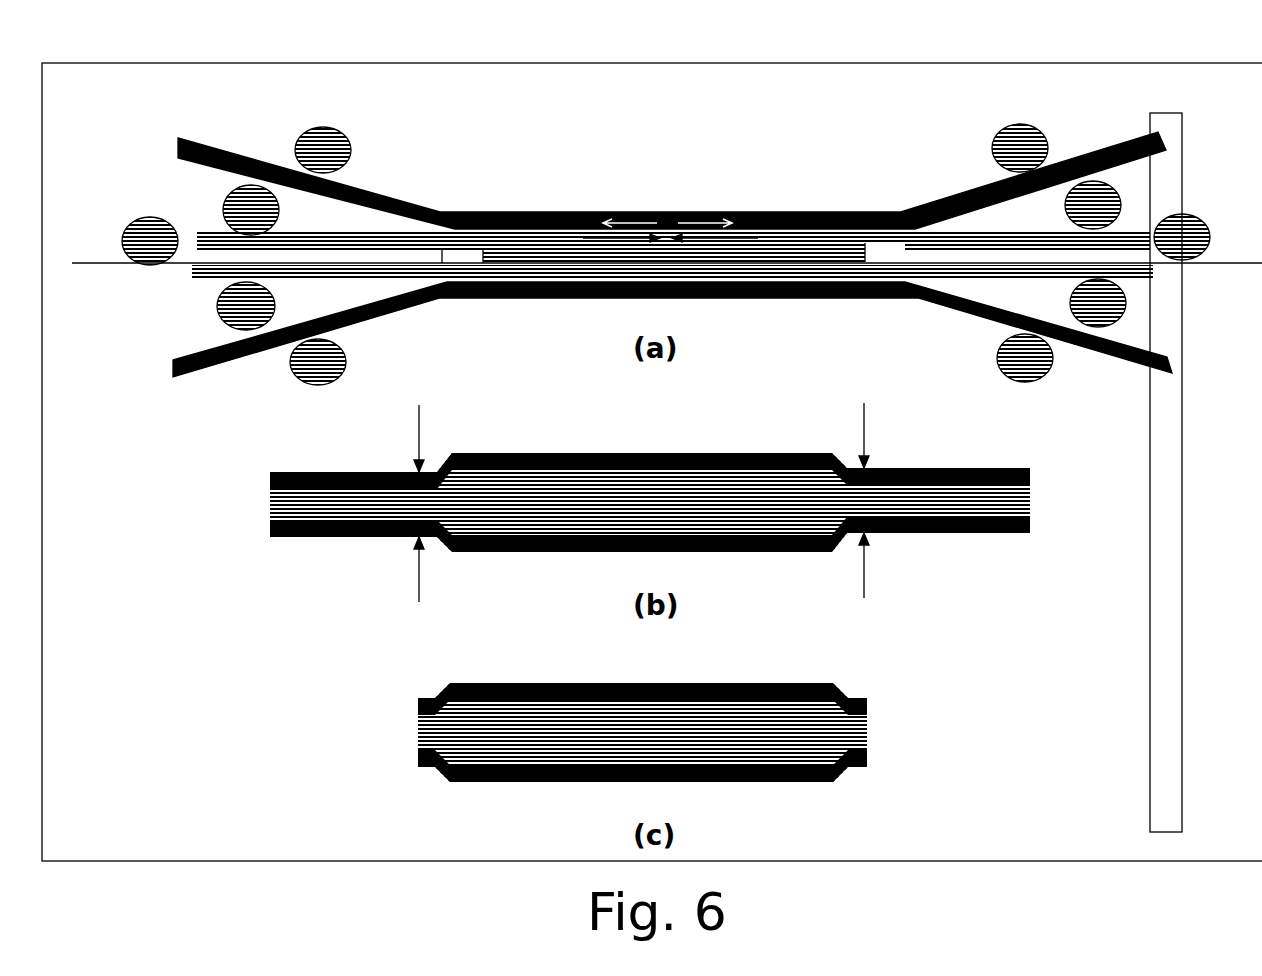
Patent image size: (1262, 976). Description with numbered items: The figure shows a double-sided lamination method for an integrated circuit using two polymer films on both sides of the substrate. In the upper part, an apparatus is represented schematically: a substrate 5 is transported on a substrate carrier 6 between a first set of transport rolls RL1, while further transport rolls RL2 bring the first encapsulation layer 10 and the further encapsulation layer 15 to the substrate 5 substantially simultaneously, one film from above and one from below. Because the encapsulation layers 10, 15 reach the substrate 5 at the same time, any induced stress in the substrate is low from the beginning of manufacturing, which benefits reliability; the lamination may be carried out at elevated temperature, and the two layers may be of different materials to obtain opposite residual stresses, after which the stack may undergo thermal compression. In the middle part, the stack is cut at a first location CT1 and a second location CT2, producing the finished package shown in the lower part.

The first set of transport rolls RL1 is at (150, 242).
The further transport rolls RL2 is at (323, 142).
The substrate 5 is at (583, 253).
The substrate carrier 6 is at (515, 263).
The first encapsulation layer 10 is at (765, 237).
The further encapsulation layer 15 is at (743, 217).
The first location CT1 is at (389, 503).
The second location CT2 is at (897, 500).